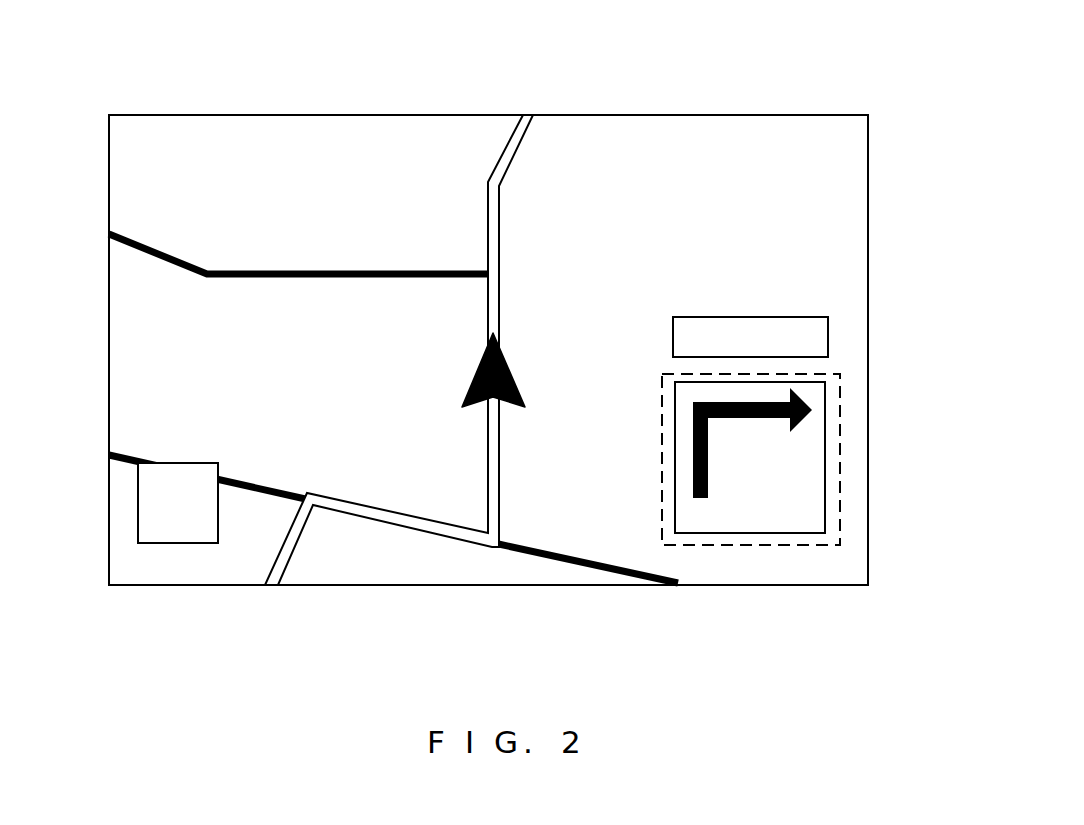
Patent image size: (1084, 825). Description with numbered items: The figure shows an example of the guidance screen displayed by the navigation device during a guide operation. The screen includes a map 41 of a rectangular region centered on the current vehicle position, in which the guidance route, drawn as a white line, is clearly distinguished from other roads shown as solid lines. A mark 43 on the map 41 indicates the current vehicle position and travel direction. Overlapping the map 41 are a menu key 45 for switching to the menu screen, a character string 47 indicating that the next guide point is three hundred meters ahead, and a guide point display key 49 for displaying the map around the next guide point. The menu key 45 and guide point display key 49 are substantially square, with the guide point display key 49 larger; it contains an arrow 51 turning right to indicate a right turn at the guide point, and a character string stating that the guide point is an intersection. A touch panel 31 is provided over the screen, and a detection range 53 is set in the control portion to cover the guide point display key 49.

The touch panel 31 is at (462, 552).
The map 41 is at (197, 137).
The mark 43 is at (508, 360).
The menu key 45 is at (167, 543).
The character string 47 is at (808, 317).
The guide point display key 49 is at (802, 533).
The arrow 51 is at (803, 417).
The detection range 53 is at (722, 545).